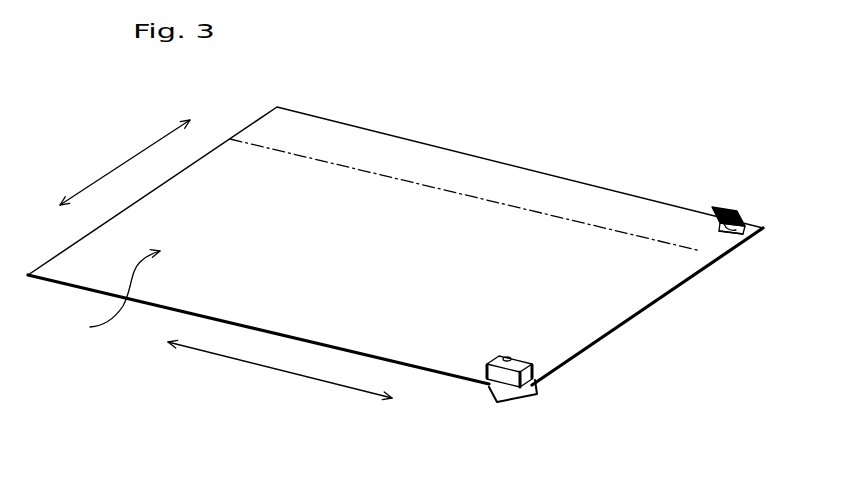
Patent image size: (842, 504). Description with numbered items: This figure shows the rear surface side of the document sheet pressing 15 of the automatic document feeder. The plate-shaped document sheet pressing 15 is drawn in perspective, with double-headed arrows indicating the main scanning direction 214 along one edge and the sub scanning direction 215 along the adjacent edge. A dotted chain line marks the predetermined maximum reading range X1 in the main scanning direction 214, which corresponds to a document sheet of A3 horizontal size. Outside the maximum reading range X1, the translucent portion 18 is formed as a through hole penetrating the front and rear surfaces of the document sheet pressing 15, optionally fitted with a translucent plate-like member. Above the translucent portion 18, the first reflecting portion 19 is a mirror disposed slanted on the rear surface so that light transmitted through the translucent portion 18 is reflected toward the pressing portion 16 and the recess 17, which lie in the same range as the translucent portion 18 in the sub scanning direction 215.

The document sheet pressing 15 is at (417, 143).
The pressing portion 16 is at (494, 402).
The recess 17 is at (513, 353).
The translucent portion 18 is at (723, 232).
The first reflecting portion 19 is at (711, 214).
The main scanning direction 214 is at (125, 162).
The sub scanning direction 215 is at (260, 367).
The maximum reading range X1 is at (109, 294).